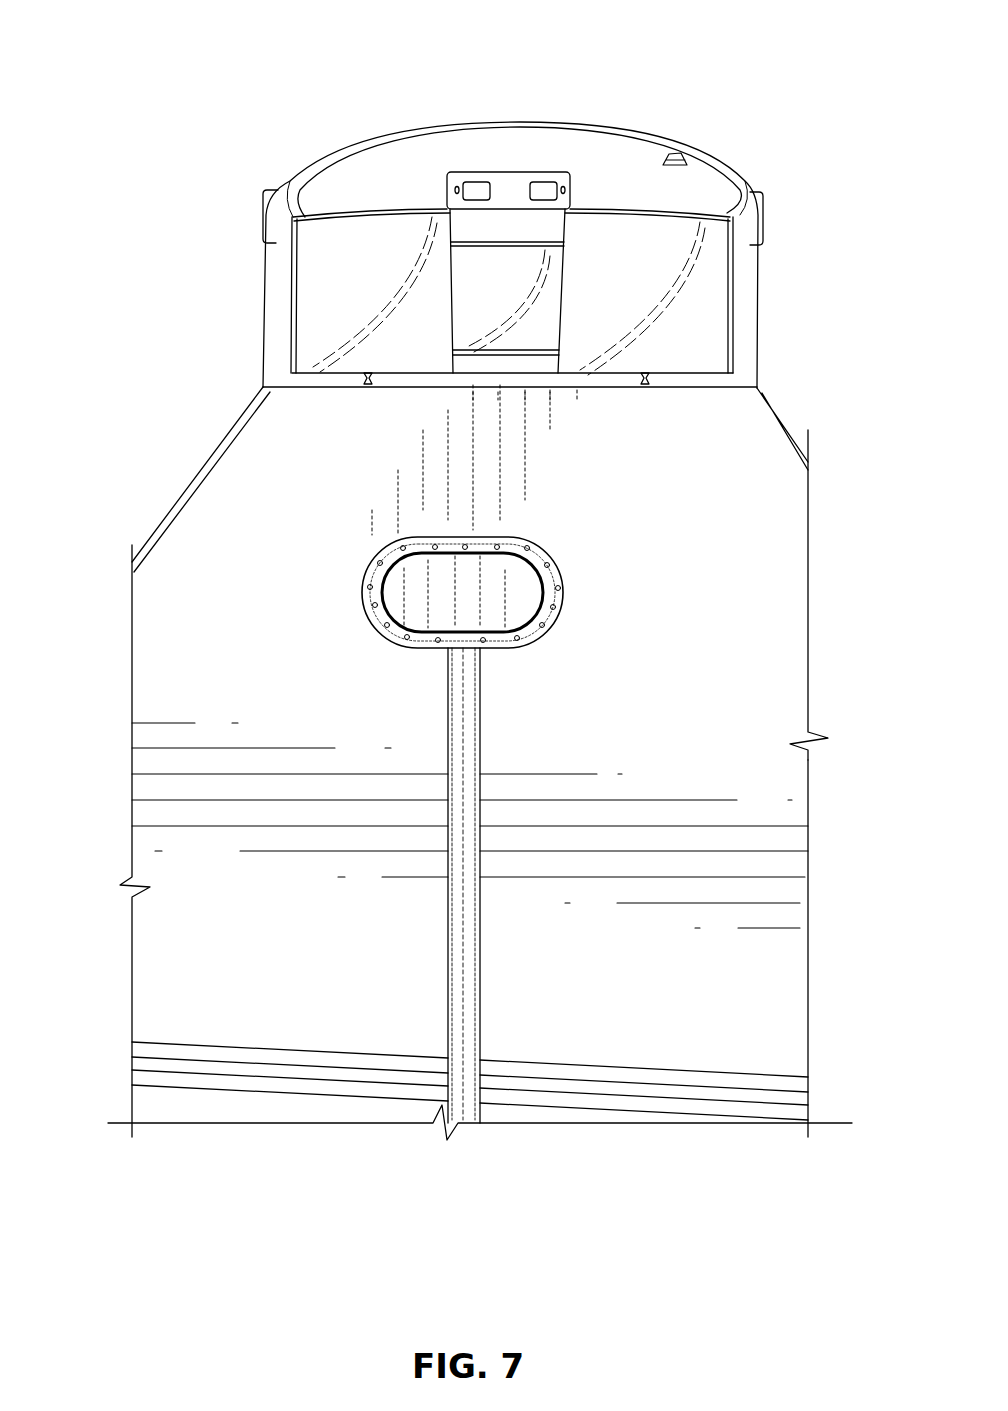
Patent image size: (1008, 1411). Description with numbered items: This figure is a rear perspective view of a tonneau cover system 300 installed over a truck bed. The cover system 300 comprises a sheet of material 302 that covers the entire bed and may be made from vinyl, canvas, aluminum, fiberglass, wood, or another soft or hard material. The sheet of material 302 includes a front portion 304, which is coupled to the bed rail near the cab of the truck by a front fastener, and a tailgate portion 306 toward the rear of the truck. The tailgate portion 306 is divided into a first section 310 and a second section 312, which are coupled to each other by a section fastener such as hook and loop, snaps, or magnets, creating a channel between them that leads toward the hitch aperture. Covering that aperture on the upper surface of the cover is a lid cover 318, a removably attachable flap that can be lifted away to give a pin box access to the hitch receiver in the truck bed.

The tonneau cover system 300 is at (218, 40).
The sheet of material 302 is at (713, 813).
The front portion 304 is at (706, 459).
The tailgate portion 306 is at (747, 1035).
The first section 310 is at (215, 913).
The second section 312 is at (713, 915).
The lid cover 318 is at (517, 583).